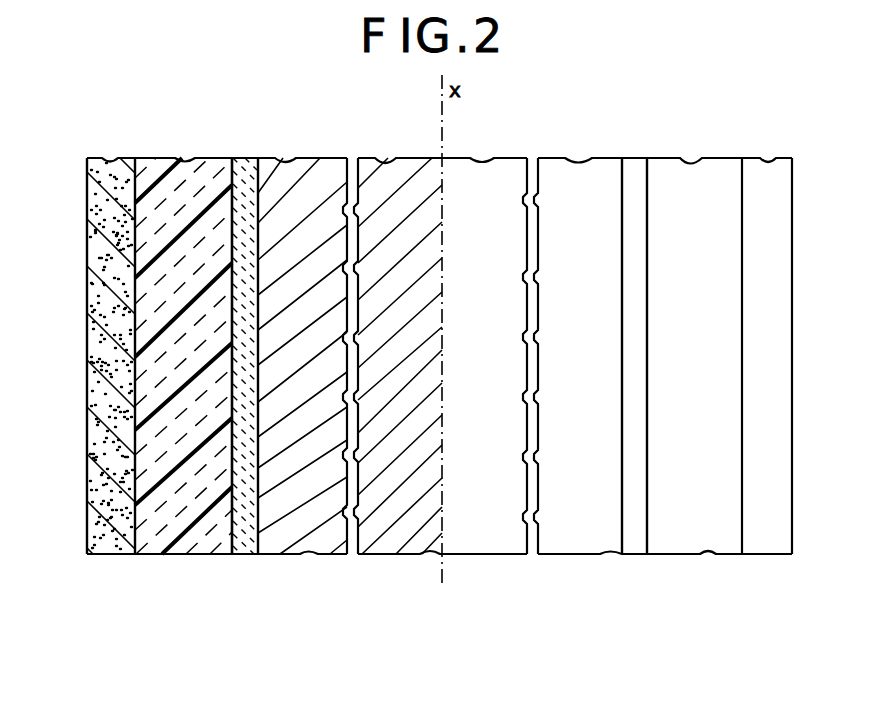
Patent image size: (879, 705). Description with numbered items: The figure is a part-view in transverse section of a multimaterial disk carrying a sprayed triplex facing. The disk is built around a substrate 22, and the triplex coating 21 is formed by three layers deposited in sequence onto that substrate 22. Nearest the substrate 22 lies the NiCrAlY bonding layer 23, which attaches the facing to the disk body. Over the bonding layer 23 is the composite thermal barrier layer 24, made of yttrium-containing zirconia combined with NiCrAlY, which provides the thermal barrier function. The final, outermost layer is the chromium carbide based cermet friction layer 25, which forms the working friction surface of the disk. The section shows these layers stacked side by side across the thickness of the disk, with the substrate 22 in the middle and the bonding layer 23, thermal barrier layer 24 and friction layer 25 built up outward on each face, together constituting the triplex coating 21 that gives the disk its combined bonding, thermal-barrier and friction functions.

The triplex coating 21 is at (642, 137).
The substrate 22 is at (372, 512).
The NiCrAlY bonding layer 23 is at (243, 535).
The composite thermal barrier layer 24 is at (190, 518).
The cermet friction layer 25 is at (105, 535).